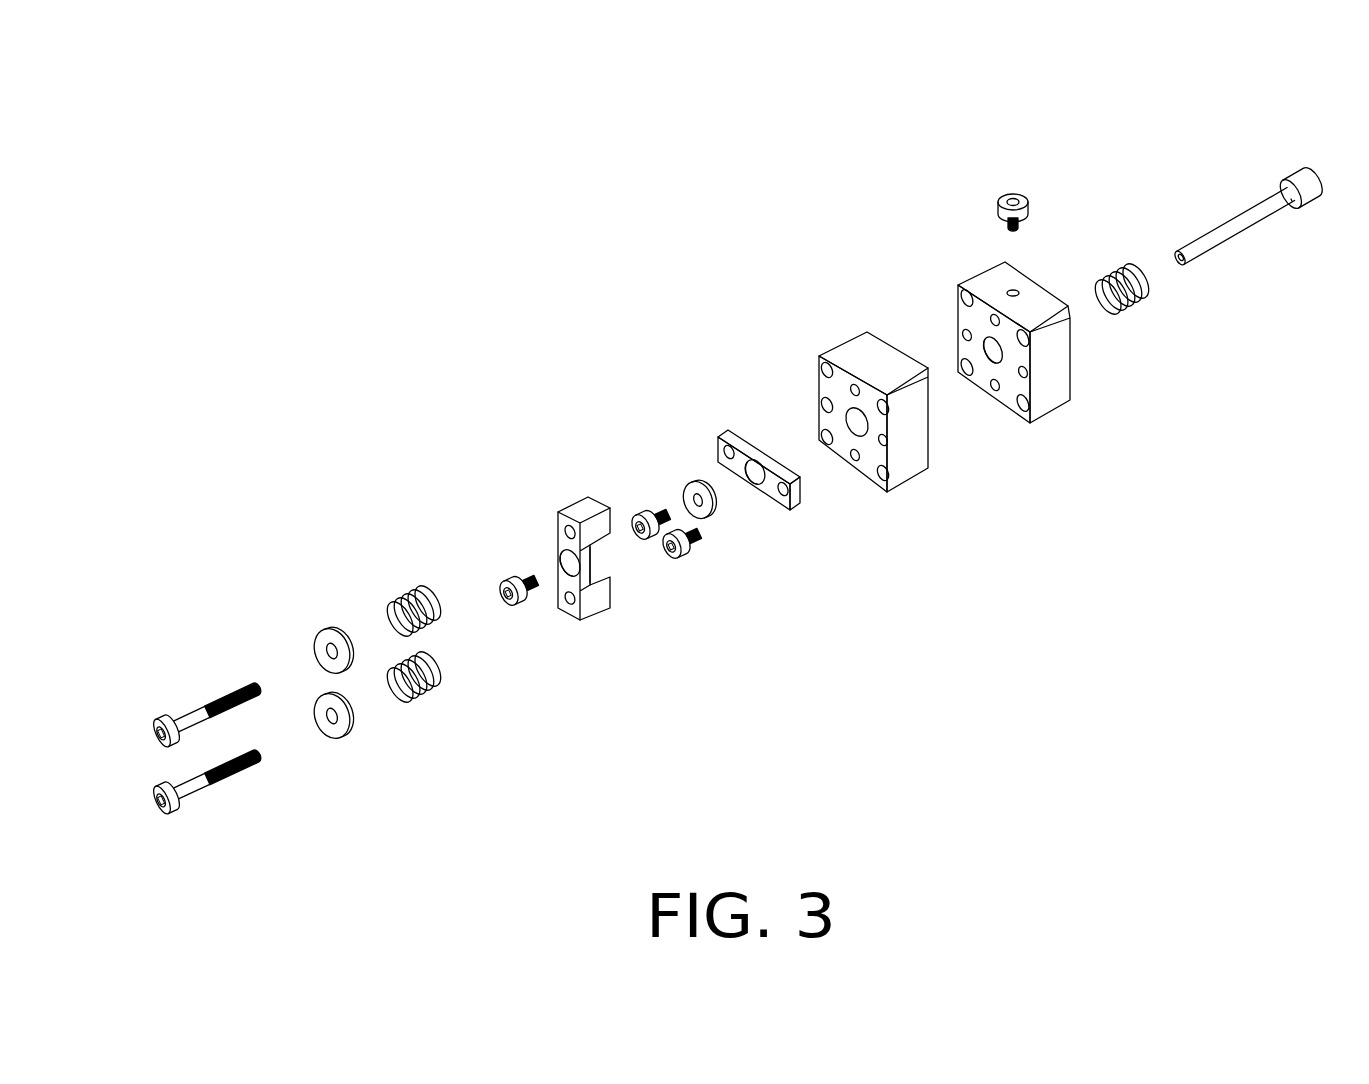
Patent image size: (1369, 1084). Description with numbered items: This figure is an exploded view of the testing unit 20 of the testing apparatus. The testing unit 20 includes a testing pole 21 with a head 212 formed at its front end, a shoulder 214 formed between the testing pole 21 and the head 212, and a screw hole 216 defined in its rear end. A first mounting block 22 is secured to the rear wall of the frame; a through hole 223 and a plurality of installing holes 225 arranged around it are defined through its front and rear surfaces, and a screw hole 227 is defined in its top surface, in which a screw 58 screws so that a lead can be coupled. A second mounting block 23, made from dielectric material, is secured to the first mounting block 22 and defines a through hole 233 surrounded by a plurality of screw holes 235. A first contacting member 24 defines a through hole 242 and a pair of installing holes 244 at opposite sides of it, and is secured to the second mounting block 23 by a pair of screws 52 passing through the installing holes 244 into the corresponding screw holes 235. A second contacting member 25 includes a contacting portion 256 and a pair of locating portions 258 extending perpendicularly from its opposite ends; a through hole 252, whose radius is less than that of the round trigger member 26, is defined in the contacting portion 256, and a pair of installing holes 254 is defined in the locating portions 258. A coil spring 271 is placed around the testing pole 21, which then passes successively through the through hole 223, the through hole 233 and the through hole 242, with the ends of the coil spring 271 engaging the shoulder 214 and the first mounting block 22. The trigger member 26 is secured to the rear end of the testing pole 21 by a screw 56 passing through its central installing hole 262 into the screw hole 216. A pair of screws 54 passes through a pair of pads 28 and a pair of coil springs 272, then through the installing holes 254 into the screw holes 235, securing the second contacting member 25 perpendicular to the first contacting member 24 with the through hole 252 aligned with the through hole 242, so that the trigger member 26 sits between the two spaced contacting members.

The testing unit 20 is at (713, 85).
The testing pole 21 is at (1230, 228).
The head 212 is at (1305, 180).
The shoulder 214 is at (1297, 220).
The screw hole 216 is at (1177, 273).
The first mounting block 22 is at (1058, 367).
The through hole 223 is at (993, 357).
The installing holes 225 is at (1020, 407).
The screw hole 227 is at (1013, 290).
The second mounting block 23 is at (860, 352).
The through hole 233 is at (846, 416).
The screw holes 235 is at (880, 477).
The first contacting member 24 is at (753, 440).
The through hole 242 is at (753, 492).
The installing holes 244 is at (718, 447).
The second contacting member 25 is at (727, 652).
The through hole 252 is at (568, 570).
The installing holes 254 is at (570, 605).
The contacting portion 256 is at (590, 560).
The locating portions 258 is at (603, 610).
The trigger member 26 is at (693, 482).
The installing hole 262 is at (700, 530).
The coil spring 271 is at (1117, 270).
The coil springs 272 is at (397, 590).
The pads 28 is at (327, 628).
The screws 52 is at (643, 510).
The screws 54 is at (162, 716).
The screw 56 is at (513, 575).
The screw 58 is at (1008, 192).